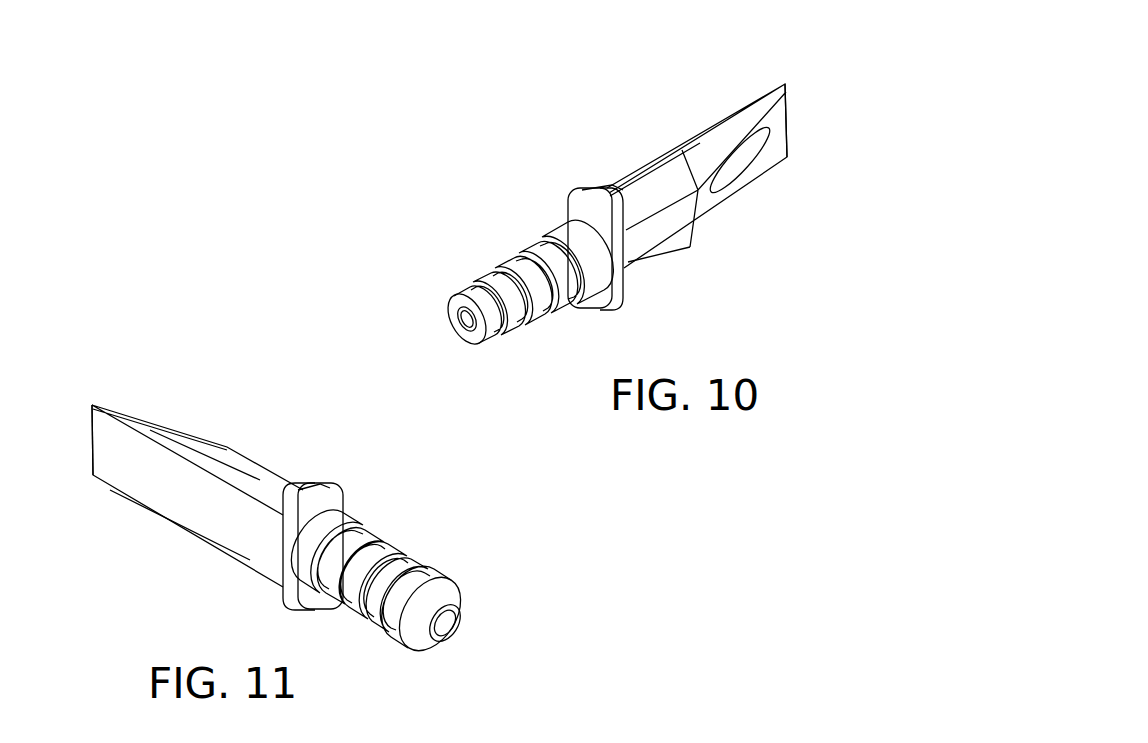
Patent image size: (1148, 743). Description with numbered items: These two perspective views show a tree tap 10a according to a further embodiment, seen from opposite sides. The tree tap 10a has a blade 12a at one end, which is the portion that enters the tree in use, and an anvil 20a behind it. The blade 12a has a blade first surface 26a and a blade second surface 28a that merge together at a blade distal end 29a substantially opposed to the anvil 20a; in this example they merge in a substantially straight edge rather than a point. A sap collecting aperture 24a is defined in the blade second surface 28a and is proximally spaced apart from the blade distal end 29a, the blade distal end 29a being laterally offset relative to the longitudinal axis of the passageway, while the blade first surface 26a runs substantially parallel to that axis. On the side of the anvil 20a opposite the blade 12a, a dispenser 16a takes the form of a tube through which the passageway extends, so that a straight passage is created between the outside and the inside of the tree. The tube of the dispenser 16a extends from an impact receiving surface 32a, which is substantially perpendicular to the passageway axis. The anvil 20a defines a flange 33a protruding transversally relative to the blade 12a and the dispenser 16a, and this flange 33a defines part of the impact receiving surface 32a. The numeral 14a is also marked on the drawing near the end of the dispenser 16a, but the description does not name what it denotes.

In FIG. 10, the tree tap 10a is at (491, 157).
In FIG. 11, the tree tap 10a is at (242, 386).
In FIG. 10, the blade 12a is at (693, 112).
In FIG. 11, the blade 12a is at (152, 406).
In FIG. 10, the handle 14a is at (470, 328).
In FIG. 11, the handle 14a is at (440, 633).
In FIG. 10, the dispenser 16a is at (526, 336).
In FIG. 11, the dispenser 16a is at (440, 572).
In FIG. 10, the anvil 20a is at (627, 299).
In FIG. 11, the anvil 20a is at (265, 566).
In FIG. 10, the sap collecting aperture 24a is at (758, 155).
In FIG. 10, the blade first surface 26a is at (628, 170).
In FIG. 11, the blade first surface 26a is at (208, 501).
In FIG. 10, the blade second surface 28a is at (680, 213).
In FIG. 11, the blade second surface 28a is at (235, 463).
In FIG. 10, the blade distal end 29a is at (787, 123).
In FIG. 11, the blade distal end 29a is at (89, 425).
In FIG. 10, the impact receiving surface 32a is at (578, 210).
In FIG. 11, the impact receiving surface 32a is at (322, 512).
In FIG. 10, the flange 33a is at (585, 185).
In FIG. 11, the flange 33a is at (318, 495).